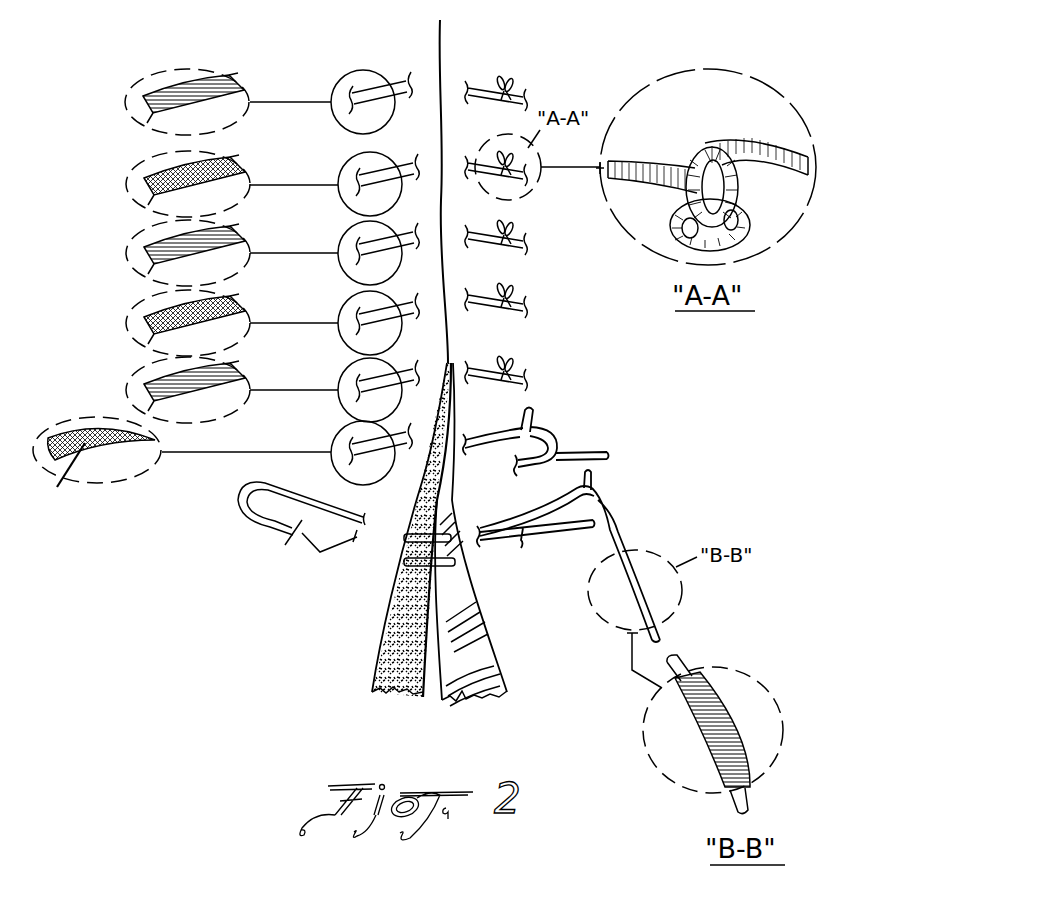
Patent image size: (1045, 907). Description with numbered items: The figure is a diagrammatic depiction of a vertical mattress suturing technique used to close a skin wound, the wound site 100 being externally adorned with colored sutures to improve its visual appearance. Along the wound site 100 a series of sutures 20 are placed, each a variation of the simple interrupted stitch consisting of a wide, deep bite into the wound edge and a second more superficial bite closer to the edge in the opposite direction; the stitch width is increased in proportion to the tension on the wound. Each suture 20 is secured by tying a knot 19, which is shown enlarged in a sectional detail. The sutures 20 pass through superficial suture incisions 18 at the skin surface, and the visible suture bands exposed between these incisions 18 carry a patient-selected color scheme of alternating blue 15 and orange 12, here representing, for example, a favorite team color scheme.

The skin wound site 100 is at (333, 620).
The orange suture color 12 is at (147, 180).
The blue suture color 15 is at (172, 92).
The superficial suture incision 18 is at (301, 533).
The knot 19 is at (674, 104).
The suture 20 is at (481, 82).